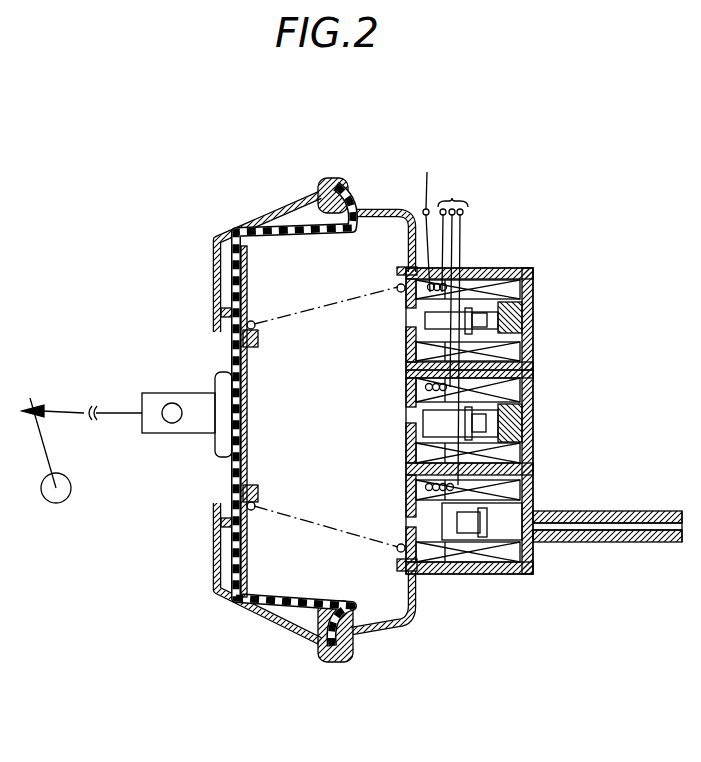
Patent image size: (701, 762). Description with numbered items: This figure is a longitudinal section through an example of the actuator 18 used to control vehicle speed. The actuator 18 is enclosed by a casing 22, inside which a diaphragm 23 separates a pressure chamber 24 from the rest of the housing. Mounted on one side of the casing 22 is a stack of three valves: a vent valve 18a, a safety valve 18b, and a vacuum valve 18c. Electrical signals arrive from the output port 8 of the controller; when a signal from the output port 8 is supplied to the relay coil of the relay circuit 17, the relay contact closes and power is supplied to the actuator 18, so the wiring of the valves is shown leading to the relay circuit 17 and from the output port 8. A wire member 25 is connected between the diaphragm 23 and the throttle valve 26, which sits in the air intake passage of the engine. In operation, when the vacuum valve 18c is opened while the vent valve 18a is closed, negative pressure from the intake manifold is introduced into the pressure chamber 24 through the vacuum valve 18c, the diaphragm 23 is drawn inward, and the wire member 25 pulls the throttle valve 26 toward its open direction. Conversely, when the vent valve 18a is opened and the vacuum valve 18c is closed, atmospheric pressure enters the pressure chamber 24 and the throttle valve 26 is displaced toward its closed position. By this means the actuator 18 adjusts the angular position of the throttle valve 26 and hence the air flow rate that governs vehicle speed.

The actuator 18 is at (386, 184).
The vent valve 18a is at (527, 324).
The safety valve 18b is at (527, 422).
The vacuum valve 18c is at (508, 524).
The relay circuit 17 is at (439, 219).
The output port 8 is at (487, 329).
The casing 22 is at (413, 612).
The diaphragm 23 is at (308, 612).
The pressure chamber 24 is at (343, 431).
The wire member 25 is at (113, 416).
The throttle valve 26 is at (59, 503).